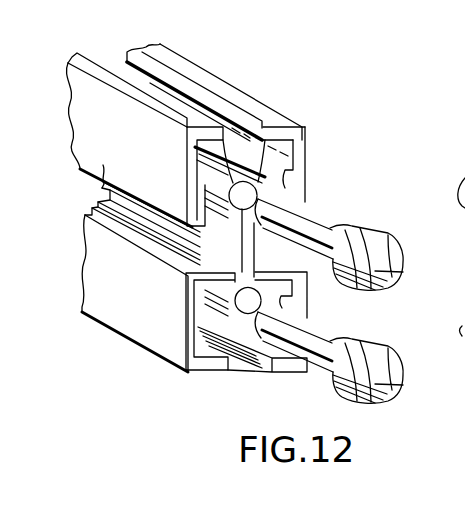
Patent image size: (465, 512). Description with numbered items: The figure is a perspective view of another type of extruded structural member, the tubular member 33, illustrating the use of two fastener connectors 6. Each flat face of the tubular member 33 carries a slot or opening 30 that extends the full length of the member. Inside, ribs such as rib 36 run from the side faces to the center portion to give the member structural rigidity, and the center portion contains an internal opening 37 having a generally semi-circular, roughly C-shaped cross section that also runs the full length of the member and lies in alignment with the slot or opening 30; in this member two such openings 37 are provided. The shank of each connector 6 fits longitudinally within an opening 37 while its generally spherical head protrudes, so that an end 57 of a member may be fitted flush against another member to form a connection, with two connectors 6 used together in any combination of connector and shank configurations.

The slot or opening 30 is at (183, 98).
The tubular member 33 is at (276, 101).
The rib 36 is at (291, 178).
The opening 37 is at (247, 294).
The end 57 is at (193, 289).
The connector 6 is at (403, 273).